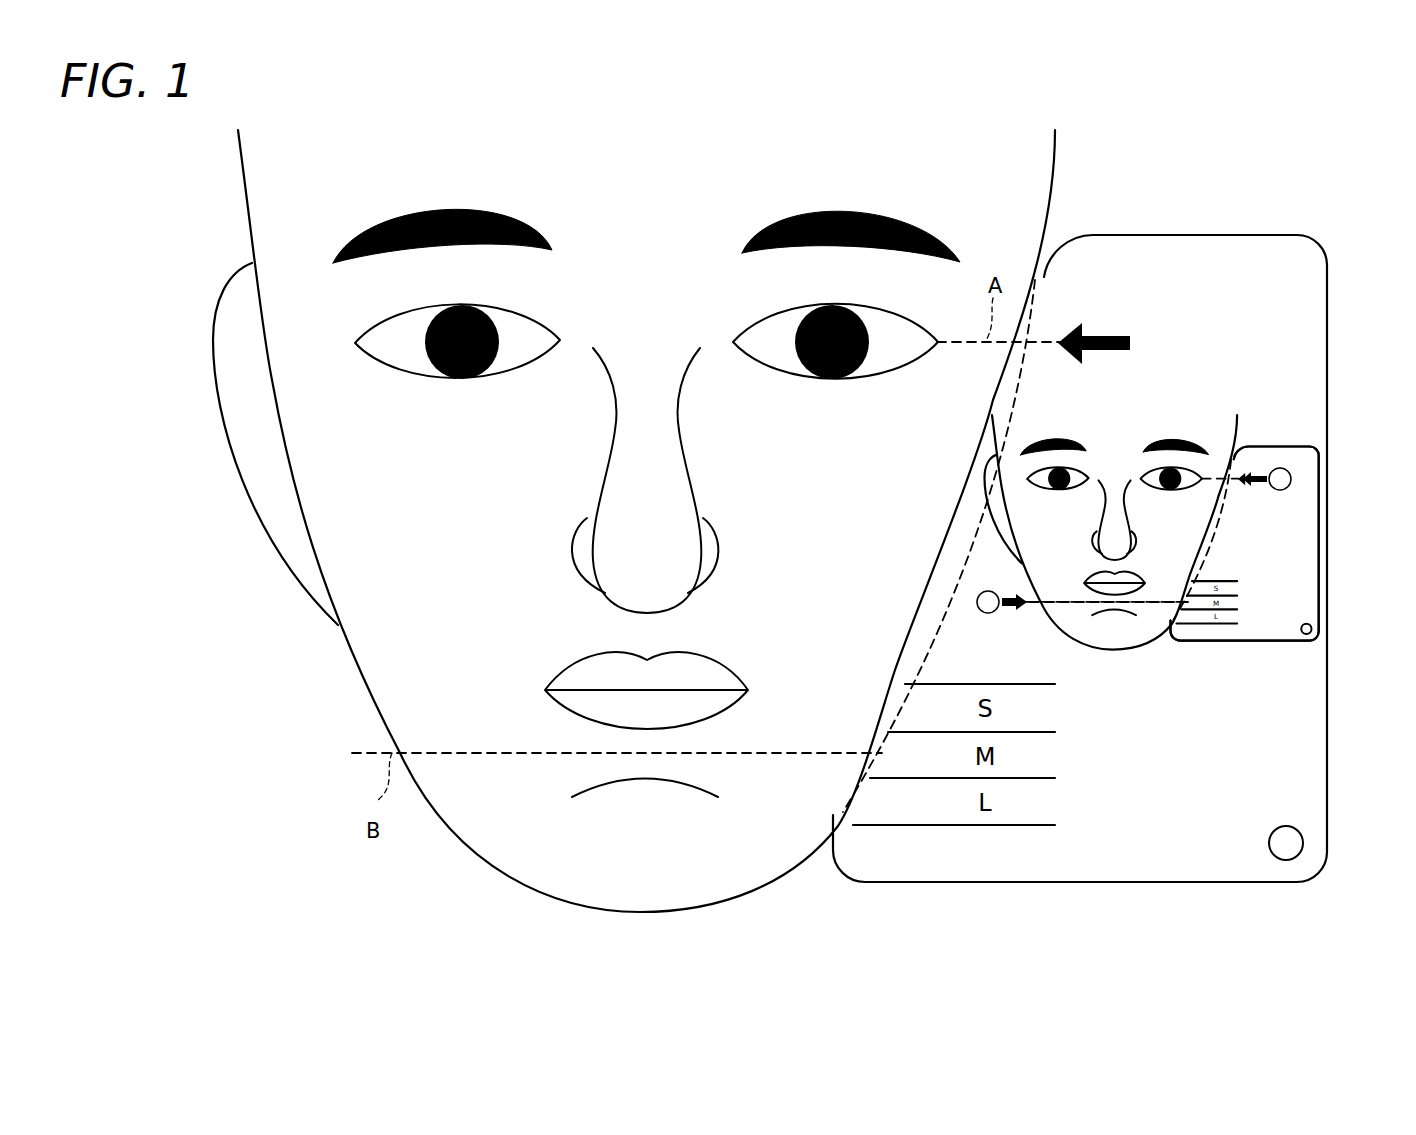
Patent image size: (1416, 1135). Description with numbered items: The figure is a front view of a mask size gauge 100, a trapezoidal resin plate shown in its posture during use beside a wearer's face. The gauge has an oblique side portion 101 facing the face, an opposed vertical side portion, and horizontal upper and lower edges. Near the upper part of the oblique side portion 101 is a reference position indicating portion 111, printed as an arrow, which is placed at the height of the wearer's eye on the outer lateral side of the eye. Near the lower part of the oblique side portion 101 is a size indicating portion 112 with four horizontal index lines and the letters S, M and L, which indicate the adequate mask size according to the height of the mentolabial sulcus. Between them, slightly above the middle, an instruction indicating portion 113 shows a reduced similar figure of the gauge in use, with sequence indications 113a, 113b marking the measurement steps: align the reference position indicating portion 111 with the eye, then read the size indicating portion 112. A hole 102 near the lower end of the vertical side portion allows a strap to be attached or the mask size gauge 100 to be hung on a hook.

The mask size gauge 100 is at (1289, 215).
The oblique side portion 101 is at (945, 528).
The hole 102 is at (1293, 857).
The reference position indicating portion 111 is at (1108, 333).
The size indicating portion 112 is at (1078, 765).
The instruction indicating portion 113 is at (1229, 388).
The sequence indication 113a is at (1291, 479).
The sequence indication 113b is at (977, 602).